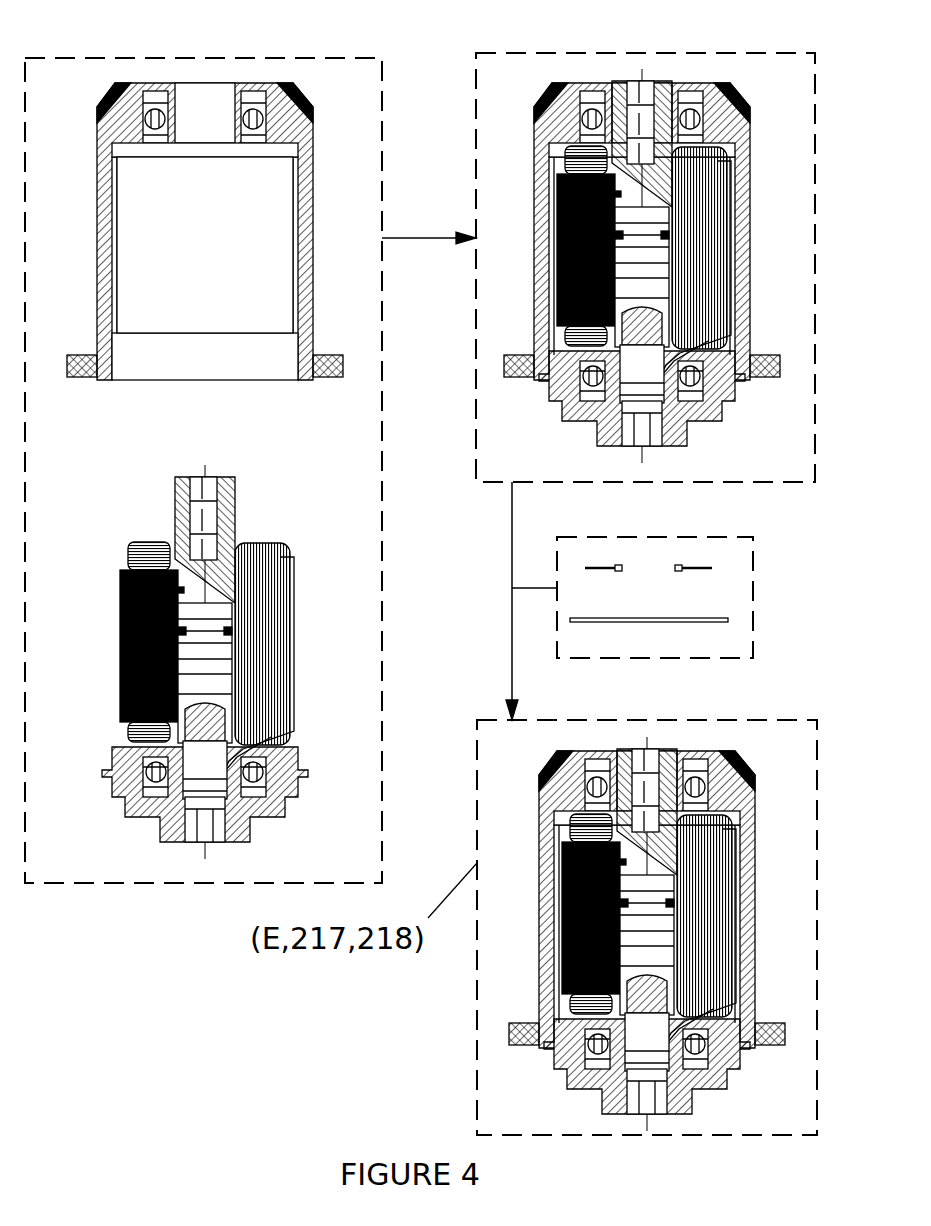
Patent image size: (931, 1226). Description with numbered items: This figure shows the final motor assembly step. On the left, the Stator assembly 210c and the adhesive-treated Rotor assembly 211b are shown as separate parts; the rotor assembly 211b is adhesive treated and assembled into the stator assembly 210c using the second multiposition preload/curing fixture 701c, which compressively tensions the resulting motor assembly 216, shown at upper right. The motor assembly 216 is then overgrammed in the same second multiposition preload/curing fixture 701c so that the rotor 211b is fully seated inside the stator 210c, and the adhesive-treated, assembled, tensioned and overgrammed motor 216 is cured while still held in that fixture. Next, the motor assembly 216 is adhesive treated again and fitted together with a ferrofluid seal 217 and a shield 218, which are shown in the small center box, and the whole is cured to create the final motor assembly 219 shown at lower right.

The Stator assembly 210c is at (98, 107).
The Rotor assembly 211b is at (119, 588).
The motor assembly 216 is at (652, 227).
The ferrofluid seal 217 is at (712, 568).
The shield 218 is at (728, 620).
The final motor assembly 219 is at (752, 775).
The second multiposition preload/curing fixture 701c is at (623, 31).